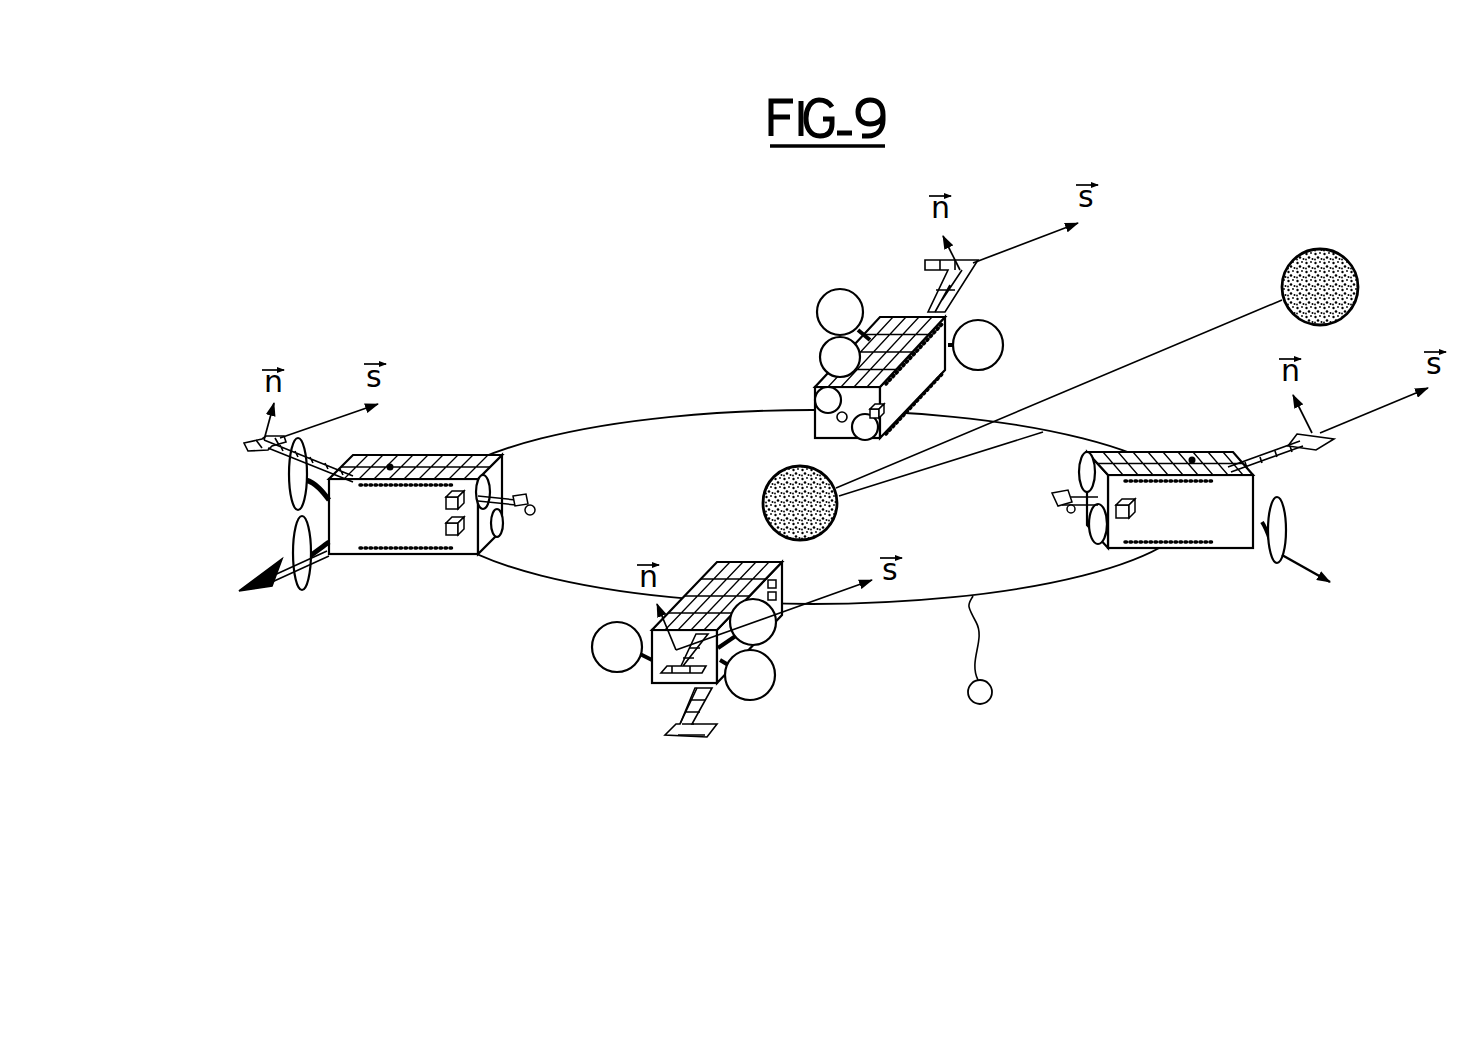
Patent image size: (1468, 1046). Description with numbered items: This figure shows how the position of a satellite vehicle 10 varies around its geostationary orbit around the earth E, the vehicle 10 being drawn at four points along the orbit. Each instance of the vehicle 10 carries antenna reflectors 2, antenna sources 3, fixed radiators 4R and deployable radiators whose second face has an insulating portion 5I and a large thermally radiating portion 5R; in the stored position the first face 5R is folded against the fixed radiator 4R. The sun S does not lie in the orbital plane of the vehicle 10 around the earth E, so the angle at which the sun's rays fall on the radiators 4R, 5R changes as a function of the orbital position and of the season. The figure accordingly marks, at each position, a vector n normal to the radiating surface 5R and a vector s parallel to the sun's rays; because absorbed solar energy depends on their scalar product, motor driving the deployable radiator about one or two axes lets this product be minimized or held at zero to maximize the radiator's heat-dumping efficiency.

The antenna reflector 2 is at (290, 480).
The antenna source 3 is at (458, 535).
The fixed radiator 4R is at (447, 455).
The radiating face of deployable radiator 5R is at (258, 440).
The insulating portion 5I is at (255, 577).
The vehicle 10 is at (397, 522).
The earth E is at (766, 485).
The sun S is at (1357, 268).